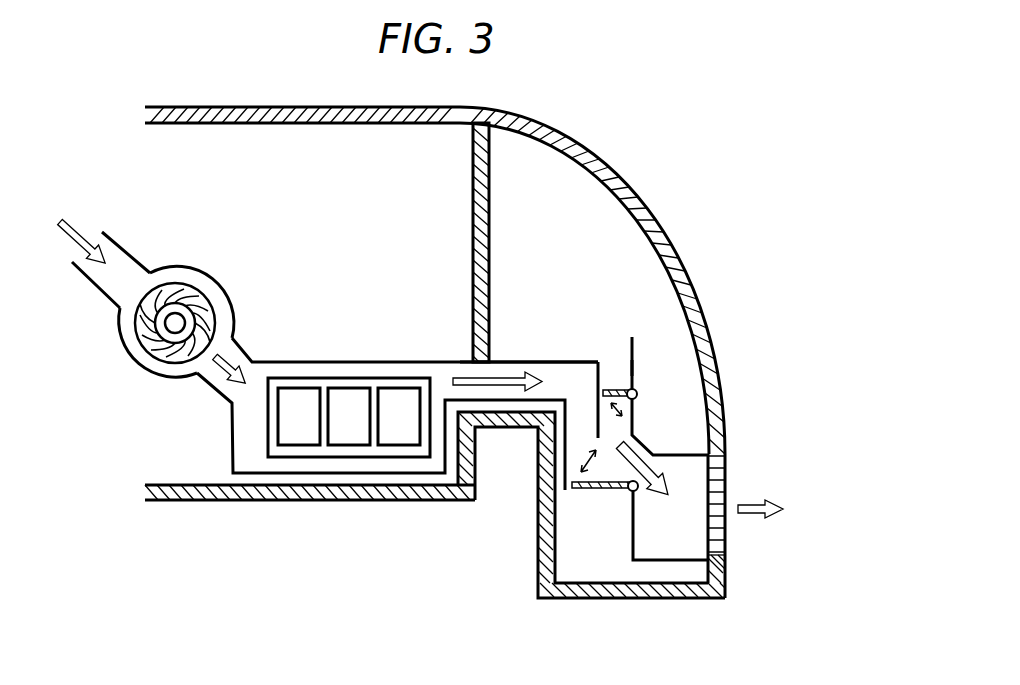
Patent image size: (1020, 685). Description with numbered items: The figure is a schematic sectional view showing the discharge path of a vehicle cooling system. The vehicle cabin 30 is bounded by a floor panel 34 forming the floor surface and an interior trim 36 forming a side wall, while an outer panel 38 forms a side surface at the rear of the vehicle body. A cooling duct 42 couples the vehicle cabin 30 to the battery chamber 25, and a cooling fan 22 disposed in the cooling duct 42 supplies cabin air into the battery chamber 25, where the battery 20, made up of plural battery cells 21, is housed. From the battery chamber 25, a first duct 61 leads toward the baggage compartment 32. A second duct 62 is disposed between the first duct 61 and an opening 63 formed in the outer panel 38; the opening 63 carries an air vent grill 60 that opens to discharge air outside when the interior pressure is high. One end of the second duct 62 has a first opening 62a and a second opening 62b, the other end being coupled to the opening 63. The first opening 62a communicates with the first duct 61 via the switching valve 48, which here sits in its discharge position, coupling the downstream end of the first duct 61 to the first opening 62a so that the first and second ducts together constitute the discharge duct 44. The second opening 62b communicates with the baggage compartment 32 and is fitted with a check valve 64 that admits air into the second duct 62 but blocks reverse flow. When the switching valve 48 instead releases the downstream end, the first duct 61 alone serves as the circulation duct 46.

The battery 20 is at (347, 377).
The battery cells 21 is at (397, 432).
The cooling fan 22 is at (147, 357).
The battery chamber 25 is at (250, 455).
The vehicle cabin 30 is at (371, 191).
The baggage compartment 32 is at (569, 256).
The floor panel 34 is at (158, 500).
The interior trim 36 is at (473, 228).
The outer panel 38 is at (612, 182).
The cooling duct 42 is at (95, 285).
The discharge duct 44 is at (668, 562).
The circulation duct 46 is at (565, 495).
The switching valve 48 is at (598, 443).
The air vent grill 60 is at (725, 470).
The first duct 61 is at (543, 362).
The second duct 62 is at (683, 453).
The first opening 62a is at (617, 462).
The second opening 62b is at (620, 390).
The opening 63 is at (727, 553).
The check valve 64 is at (633, 368).